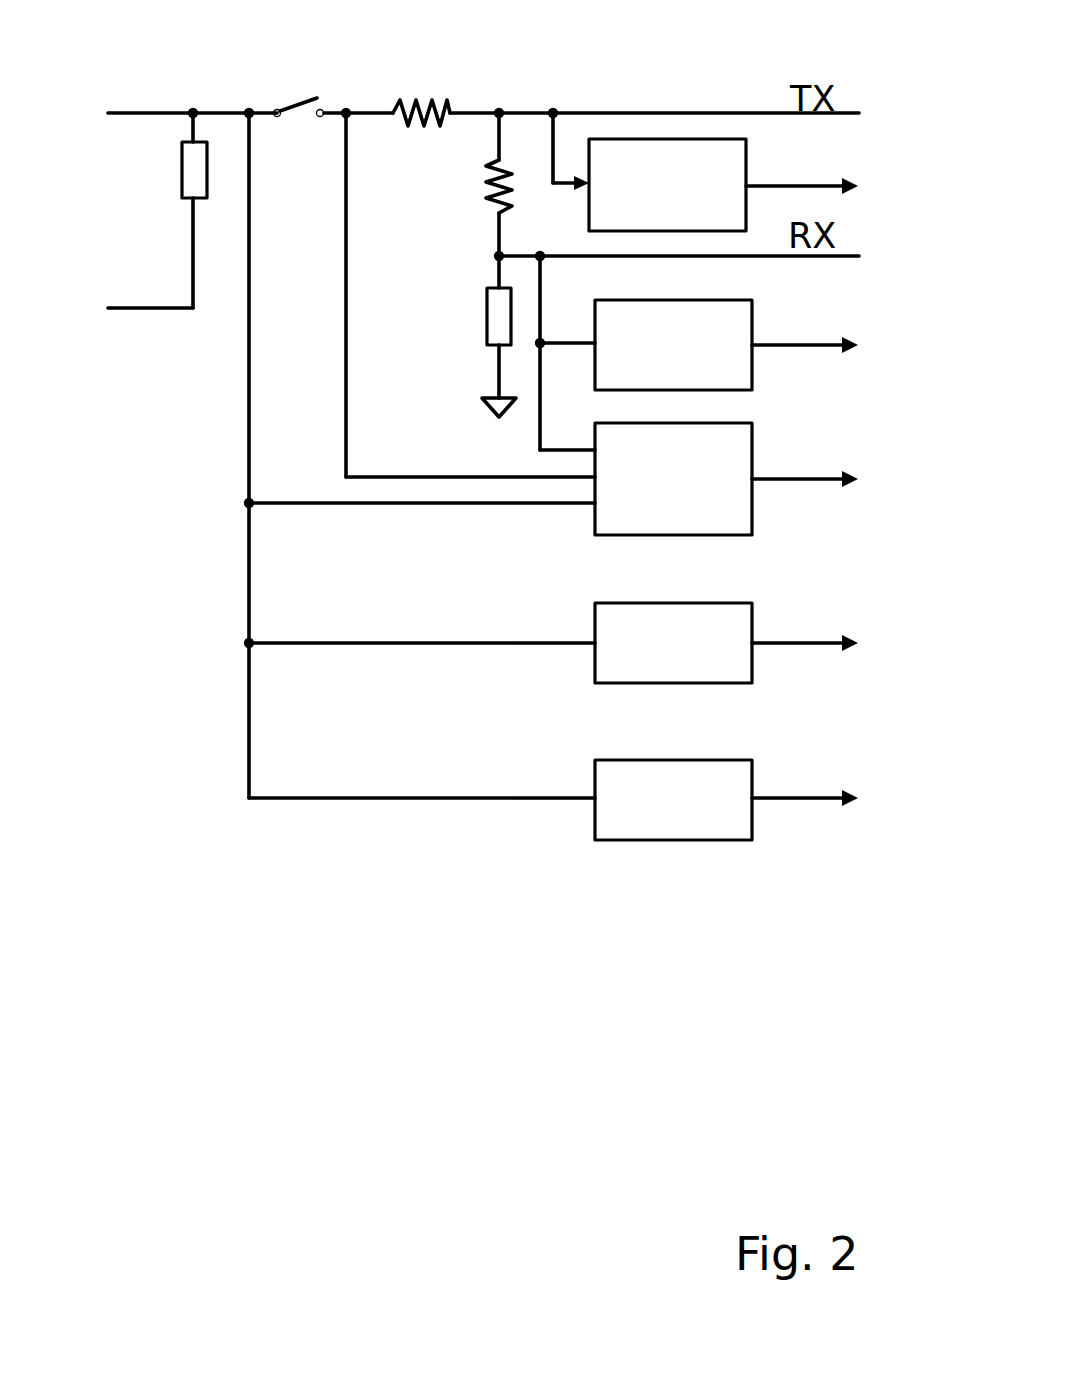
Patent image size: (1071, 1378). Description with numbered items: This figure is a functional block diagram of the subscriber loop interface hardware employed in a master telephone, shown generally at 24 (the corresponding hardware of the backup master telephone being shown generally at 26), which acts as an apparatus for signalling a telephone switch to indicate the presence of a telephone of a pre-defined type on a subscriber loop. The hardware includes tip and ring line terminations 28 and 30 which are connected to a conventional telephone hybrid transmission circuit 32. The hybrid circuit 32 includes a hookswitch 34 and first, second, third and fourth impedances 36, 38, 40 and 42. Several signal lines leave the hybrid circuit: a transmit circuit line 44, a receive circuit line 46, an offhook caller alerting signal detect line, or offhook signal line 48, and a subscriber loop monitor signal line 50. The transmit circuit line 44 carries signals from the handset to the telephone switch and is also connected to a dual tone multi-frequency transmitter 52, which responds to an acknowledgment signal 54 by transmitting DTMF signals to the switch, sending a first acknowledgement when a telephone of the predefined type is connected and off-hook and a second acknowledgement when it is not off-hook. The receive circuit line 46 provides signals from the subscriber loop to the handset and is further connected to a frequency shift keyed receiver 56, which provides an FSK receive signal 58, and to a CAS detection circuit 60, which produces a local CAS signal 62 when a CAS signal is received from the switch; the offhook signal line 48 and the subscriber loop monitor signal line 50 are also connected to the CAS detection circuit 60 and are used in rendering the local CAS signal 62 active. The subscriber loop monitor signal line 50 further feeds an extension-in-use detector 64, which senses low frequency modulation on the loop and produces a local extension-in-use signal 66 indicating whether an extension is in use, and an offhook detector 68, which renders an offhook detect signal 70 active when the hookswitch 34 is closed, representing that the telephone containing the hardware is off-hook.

The subscriber loop interface hardware 24 is at (660, 55).
The backup master telephone hardware 26 is at (110, 199).
The tip line termination 28 is at (118, 112).
The ring line termination 30 is at (150, 309).
The hybrid transmission circuit 32 is at (478, 45).
The hookswitch 34 is at (321, 100).
The first impedance 36 is at (182, 176).
The second impedance 38 is at (412, 104).
The third impedance 40 is at (490, 180).
The fourth impedance 42 is at (487, 305).
The transmit circuit line 44 is at (510, 112).
The receive circuit line 46 is at (506, 254).
The offhook signal line 48 is at (350, 474).
The subscriber loop monitor signal line 50 is at (252, 501).
The DTMF transmitter 52 is at (748, 155).
The acknowledgment signal 54 is at (848, 184).
The FSK receiver 56 is at (730, 300).
The FSK receive signal 58 is at (848, 344).
The CAS detection circuit 60 is at (726, 423).
The local CAS signal 62 is at (848, 478).
The extension-in-use detector 64 is at (722, 603).
The local extension-in-use signal 66 is at (848, 642).
The offhook detector 68 is at (722, 760).
The offhook detect signal 70 is at (848, 797).